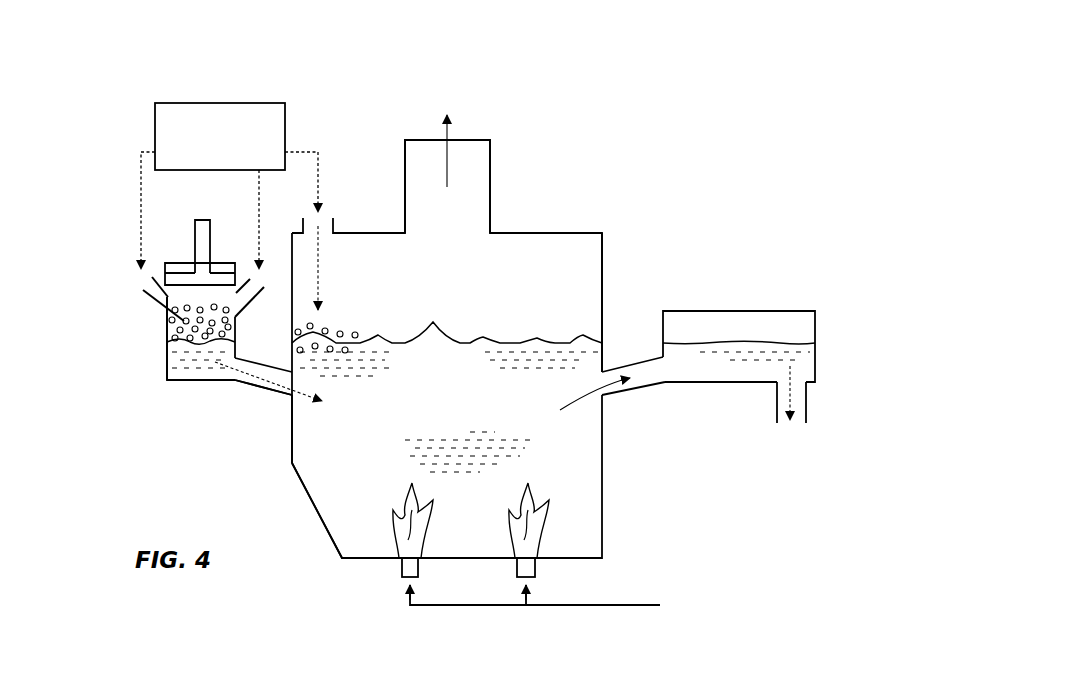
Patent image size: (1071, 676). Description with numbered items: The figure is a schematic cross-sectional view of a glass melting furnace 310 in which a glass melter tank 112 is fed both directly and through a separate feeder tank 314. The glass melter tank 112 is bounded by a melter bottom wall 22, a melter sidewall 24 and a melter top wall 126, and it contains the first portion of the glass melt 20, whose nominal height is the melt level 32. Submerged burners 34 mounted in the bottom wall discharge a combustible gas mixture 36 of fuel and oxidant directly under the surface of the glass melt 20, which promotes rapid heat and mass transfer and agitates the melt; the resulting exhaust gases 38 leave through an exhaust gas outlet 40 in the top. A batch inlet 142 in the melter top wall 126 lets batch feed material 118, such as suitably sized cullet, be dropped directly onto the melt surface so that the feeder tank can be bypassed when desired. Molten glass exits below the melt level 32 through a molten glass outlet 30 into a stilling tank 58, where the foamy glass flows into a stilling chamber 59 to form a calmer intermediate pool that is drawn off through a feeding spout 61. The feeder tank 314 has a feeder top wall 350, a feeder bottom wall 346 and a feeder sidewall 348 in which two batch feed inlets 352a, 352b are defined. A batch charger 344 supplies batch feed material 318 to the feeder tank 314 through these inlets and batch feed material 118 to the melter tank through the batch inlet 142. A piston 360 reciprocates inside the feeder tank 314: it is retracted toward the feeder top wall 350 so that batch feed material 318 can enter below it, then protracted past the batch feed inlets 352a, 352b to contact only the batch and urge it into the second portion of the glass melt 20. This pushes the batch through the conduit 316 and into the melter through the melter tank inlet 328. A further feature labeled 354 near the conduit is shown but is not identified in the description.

The glass melting furnace 310 is at (640, 97).
The melter sidewall 24 is at (602, 238).
The glass melter tank 112 is at (562, 195).
The exhaust gas outlet 40 is at (491, 156).
The exhaust gases 38 is at (452, 121).
The melter top wall 126 is at (510, 233).
The batch inlet 142 is at (331, 200).
The melter bottom wall 22 is at (352, 560).
The melter tank inlet 328 is at (282, 410).
The glass melt 20 is at (450, 412).
The melt level 32 is at (530, 343).
The batch feed material 118 is at (347, 317).
The submerged burners 34 is at (517, 567).
The combustible gas mixture 36 is at (554, 602).
The molten glass outlet 30 is at (640, 393).
The stilling tank 58 is at (815, 322).
The stilling chamber 59 is at (775, 320).
The feeding spout 61 is at (808, 403).
The feeder tank 314 is at (132, 370).
The feeder sidewall 348 is at (166, 366).
The feeder bottom wall 346 is at (177, 382).
The batch feed material 318 is at (183, 316).
The batch feed inlet 352a is at (143, 290).
The batch feed inlet 352b is at (247, 306).
The feeder top wall 350 is at (182, 263).
The piston 360 is at (203, 218).
The chute 354 is at (221, 406).
The conduit 316 is at (253, 383).
The batch charger 344 is at (213, 186).